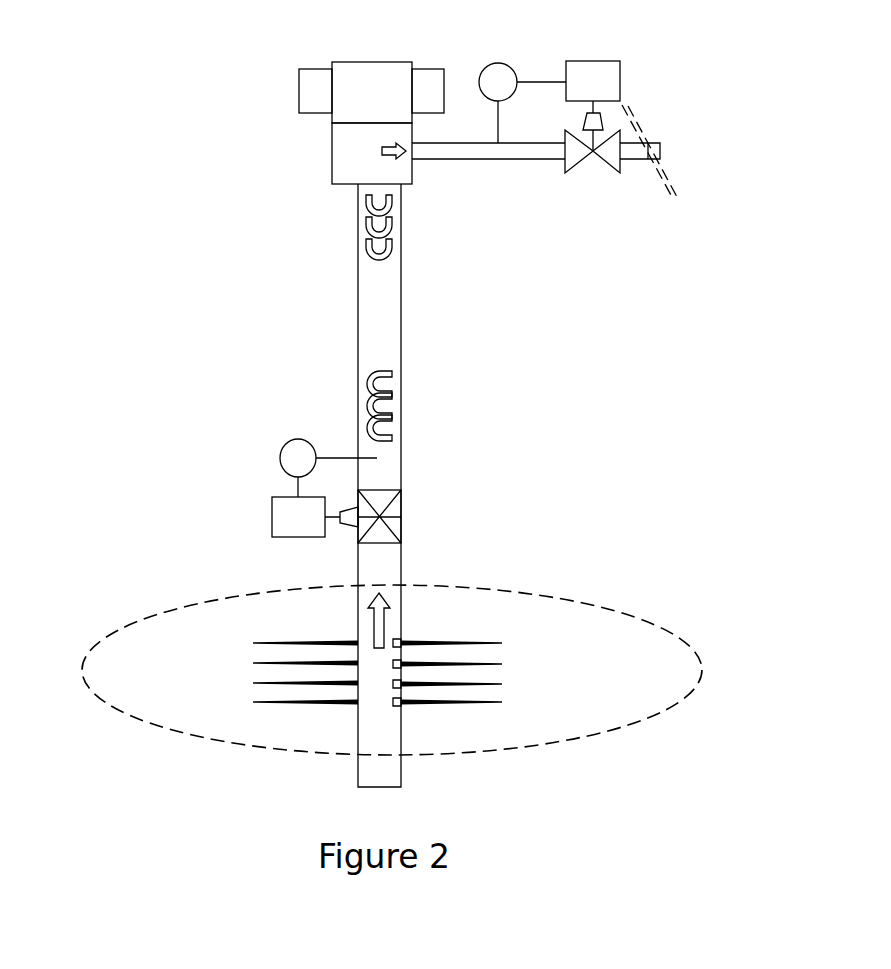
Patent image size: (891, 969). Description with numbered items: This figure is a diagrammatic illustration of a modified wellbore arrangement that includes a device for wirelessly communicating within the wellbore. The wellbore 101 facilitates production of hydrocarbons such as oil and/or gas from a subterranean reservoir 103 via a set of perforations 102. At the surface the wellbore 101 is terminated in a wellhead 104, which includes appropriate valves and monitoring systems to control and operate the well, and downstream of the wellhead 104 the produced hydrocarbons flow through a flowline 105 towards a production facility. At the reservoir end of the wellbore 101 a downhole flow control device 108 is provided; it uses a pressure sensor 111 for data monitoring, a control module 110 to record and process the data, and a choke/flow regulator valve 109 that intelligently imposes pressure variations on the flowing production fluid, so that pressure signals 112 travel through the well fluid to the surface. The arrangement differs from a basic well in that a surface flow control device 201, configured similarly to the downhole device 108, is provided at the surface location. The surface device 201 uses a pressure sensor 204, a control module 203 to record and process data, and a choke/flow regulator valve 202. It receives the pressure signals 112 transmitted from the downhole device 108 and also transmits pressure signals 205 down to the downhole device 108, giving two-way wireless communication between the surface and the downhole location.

The wellbore 101 is at (401, 447).
The perforations 102 is at (438, 705).
The subterranean reservoir 103 is at (593, 652).
The wellhead 104 is at (294, 143).
The flowline 105 is at (500, 160).
The flow control device 108 is at (260, 483).
The choke/flow regulator valve 109 is at (397, 512).
The control module 110 is at (272, 517).
The pressure sensor 111 is at (282, 450).
The pressure signals 112 is at (346, 401).
The flow control device 201 is at (695, 65).
The choke/flow regulator valve 202 is at (603, 167).
The control module 203 is at (620, 82).
The pressure sensor 204 is at (498, 63).
The pressure signals 205 is at (349, 224).